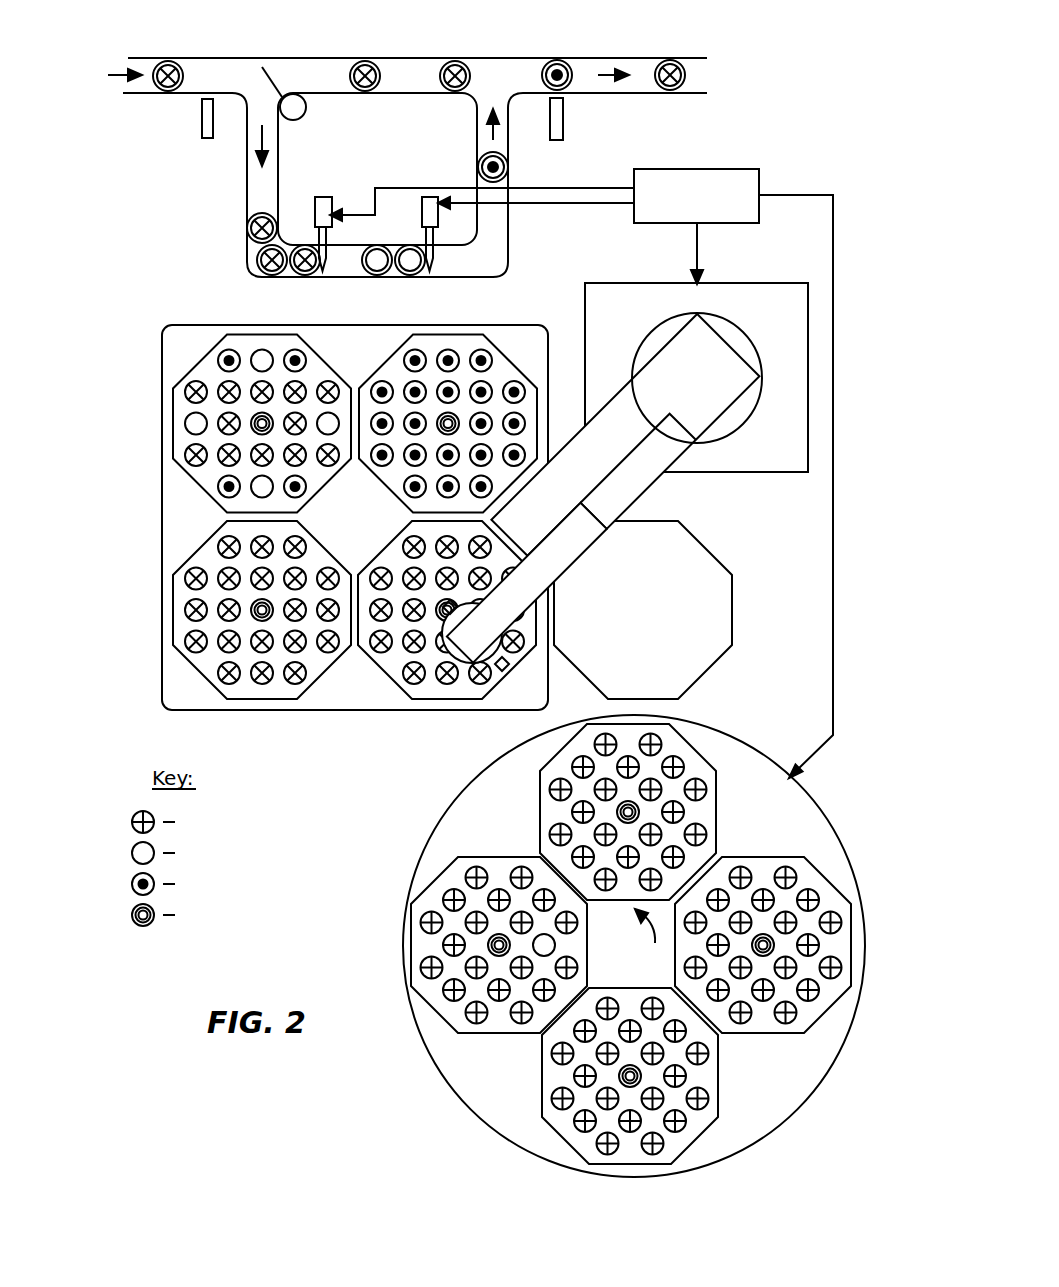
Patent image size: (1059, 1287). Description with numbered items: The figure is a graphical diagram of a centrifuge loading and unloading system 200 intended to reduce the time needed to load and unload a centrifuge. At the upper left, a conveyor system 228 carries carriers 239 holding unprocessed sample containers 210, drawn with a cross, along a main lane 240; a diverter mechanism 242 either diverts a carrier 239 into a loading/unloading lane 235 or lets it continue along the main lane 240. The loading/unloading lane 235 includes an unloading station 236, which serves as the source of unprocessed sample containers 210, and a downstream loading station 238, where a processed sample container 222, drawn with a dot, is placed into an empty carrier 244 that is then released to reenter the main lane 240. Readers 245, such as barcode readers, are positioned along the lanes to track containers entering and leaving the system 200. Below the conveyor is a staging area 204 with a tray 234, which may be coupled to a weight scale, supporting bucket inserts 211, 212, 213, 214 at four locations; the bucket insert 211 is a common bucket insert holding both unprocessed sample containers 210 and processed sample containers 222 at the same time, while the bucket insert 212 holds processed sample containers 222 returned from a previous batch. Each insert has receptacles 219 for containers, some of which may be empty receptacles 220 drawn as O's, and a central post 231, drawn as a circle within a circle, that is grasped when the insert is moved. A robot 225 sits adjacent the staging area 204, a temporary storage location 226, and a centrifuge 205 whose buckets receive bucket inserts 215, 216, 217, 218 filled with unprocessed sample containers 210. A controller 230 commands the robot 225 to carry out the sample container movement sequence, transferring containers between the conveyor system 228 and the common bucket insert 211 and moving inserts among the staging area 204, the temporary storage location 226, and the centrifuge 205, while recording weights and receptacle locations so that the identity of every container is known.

The centrifuge loading and unloading system 200 is at (768, 97).
The staging area 204 is at (335, 501).
The centrifuge 205 is at (601, 940).
The unprocessed sample containers 210 is at (172, 62).
The bucket insert 211 is at (172, 425).
The bucket insert 212 is at (497, 345).
The bucket insert 213 is at (393, 680).
The bucket insert 214 is at (173, 607).
The bucket insert 215 is at (690, 745).
The bucket insert 216 is at (748, 855).
The bucket insert 217 is at (542, 1080).
The bucket insert 218 is at (437, 1013).
The receptacles 219 is at (442, 892).
The empty receptacles 220 is at (175, 853).
The processed sample containers 222 is at (383, 387).
The robot 225 is at (748, 275).
The temporary storage location 226 is at (661, 622).
The conveyor system 228 is at (508, 50).
The controller 230 is at (701, 160).
The central post 231 is at (175, 914).
The tray 234 is at (185, 512).
The loading/unloading lane 235 is at (234, 162).
The unloading station 236 is at (316, 183).
The loading station 238 is at (433, 180).
The carriers 239 is at (152, 63).
The main lane 240 is at (197, 78).
The diverter mechanism 242 is at (282, 96).
The empty carrier 244 is at (410, 268).
The readers 245 is at (204, 140).